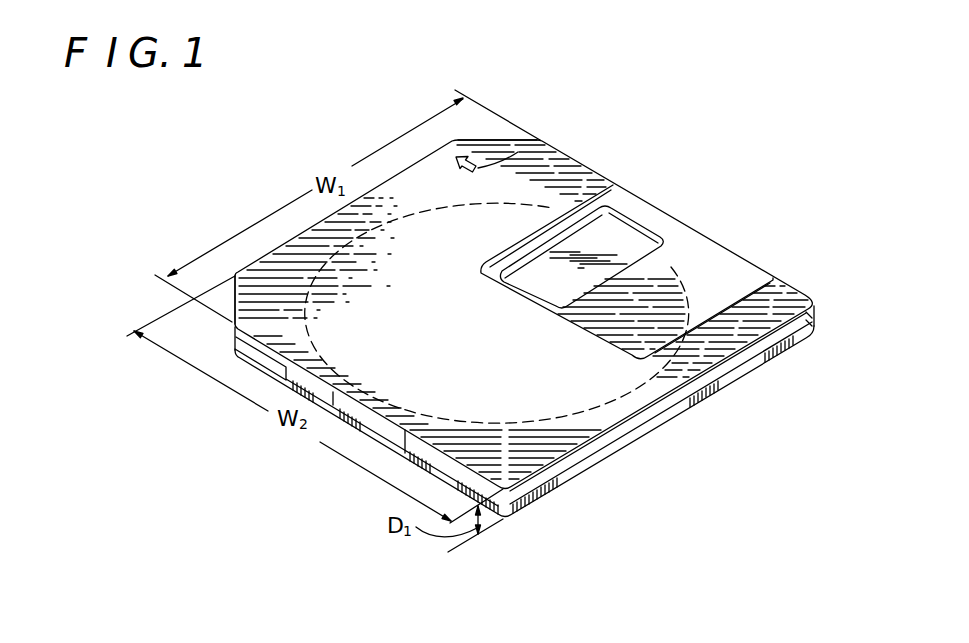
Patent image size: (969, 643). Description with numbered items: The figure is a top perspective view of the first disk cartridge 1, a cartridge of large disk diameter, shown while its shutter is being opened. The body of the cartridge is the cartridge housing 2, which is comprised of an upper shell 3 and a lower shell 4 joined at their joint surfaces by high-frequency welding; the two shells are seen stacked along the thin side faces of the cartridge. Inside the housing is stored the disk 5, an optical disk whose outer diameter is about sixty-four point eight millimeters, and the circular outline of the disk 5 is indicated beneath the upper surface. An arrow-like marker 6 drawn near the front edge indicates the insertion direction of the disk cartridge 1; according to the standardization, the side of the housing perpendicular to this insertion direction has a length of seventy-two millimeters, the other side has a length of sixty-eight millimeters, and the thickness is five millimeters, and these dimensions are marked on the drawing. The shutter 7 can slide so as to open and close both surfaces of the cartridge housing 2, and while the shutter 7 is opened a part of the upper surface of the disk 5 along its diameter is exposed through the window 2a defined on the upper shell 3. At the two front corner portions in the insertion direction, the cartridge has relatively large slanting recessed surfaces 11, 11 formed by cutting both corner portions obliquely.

The first disk cartridge 1 is at (666, 430).
The cartridge housing 2 is at (797, 363).
The window 2a is at (639, 212).
The upper shell 3 is at (750, 353).
The lower shell 4 is at (743, 372).
The disk 5 is at (629, 248).
The arrow-like marker 6 is at (537, 140).
The shutter 7 is at (740, 268).
The slanting recessed surfaces 11 is at (233, 304).